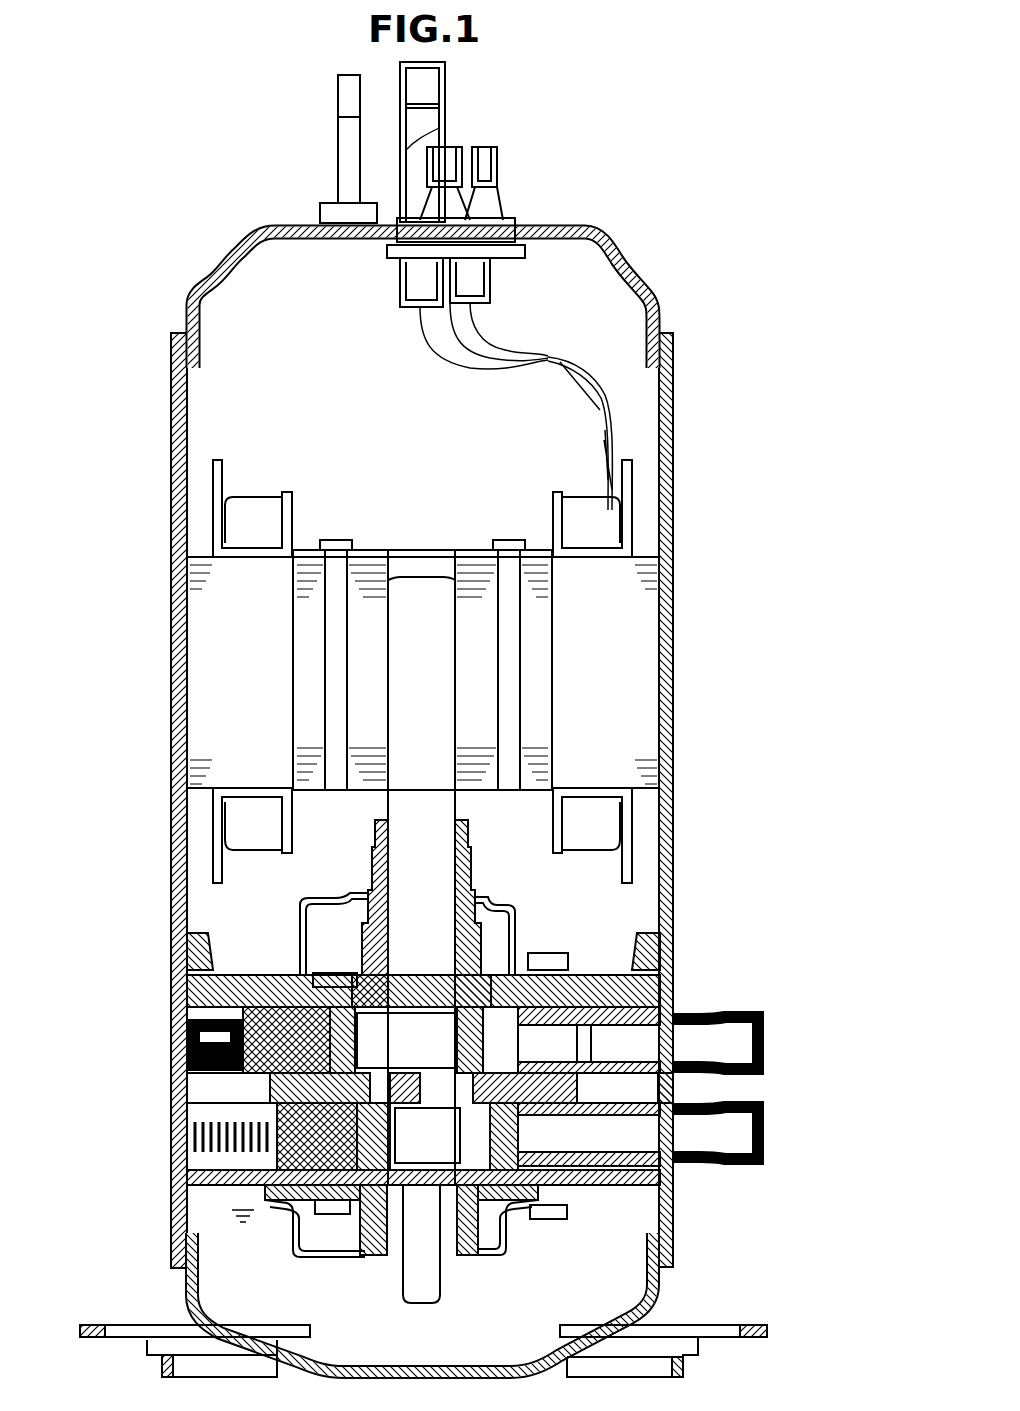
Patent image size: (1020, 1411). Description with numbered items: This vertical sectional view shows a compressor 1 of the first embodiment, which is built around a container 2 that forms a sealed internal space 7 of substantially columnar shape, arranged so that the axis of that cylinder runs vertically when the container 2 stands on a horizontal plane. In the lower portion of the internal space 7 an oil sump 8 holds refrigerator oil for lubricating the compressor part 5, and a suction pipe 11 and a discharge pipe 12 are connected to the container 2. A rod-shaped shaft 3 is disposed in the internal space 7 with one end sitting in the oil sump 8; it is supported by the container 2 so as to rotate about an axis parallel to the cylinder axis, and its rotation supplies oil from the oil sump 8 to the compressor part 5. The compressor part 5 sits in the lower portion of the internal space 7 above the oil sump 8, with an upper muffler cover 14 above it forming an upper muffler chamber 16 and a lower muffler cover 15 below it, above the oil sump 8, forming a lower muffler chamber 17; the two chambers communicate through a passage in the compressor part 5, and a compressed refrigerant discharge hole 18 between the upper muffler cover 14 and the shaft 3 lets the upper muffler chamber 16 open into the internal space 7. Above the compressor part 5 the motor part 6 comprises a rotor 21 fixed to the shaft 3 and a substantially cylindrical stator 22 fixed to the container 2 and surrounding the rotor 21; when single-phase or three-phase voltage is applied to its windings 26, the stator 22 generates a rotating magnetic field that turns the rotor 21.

The compressor 1 is at (716, 124).
The container 2 is at (423, 761).
The shaft 3 is at (385, 803).
The compressor part 5 is at (242, 1195).
The motor part 6 is at (374, 638).
The internal space 7 is at (297, 267).
The oil sump 8 is at (220, 1290).
The suction pipe 11 is at (760, 1003).
The discharge pipe 12 is at (448, 82).
The upper muffler cover 14 is at (503, 902).
The lower muffler cover 15 is at (497, 1258).
The upper muffler chamber 16 is at (488, 937).
The lower muffler chamber 17 is at (495, 1230).
The compressed refrigerant discharge hole 18 is at (480, 893).
The rotor 21 is at (453, 577).
The stator 22 is at (553, 478).
The windings 26 is at (248, 510).